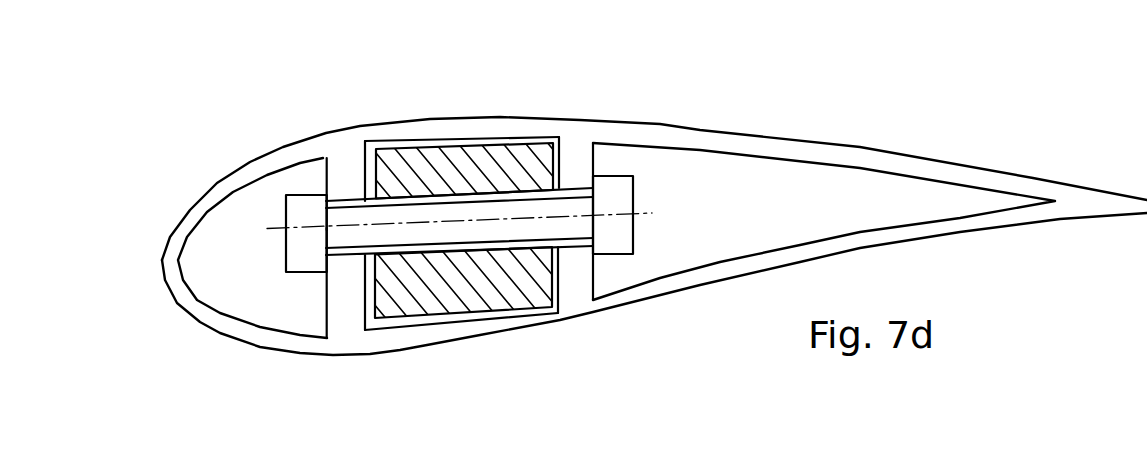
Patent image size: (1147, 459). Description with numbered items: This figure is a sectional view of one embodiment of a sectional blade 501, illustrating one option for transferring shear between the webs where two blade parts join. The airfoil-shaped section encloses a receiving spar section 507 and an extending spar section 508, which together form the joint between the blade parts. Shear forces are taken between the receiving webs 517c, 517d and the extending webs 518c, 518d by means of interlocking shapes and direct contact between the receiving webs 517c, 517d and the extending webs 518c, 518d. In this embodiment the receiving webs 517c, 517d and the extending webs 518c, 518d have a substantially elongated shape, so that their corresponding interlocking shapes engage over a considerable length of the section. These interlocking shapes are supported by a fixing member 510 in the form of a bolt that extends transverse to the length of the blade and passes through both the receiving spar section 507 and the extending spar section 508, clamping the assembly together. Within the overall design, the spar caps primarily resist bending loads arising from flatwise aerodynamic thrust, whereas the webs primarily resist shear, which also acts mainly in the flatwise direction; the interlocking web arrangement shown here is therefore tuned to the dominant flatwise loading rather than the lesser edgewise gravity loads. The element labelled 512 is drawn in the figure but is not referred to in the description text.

The sectional blade 501 is at (960, 132).
The receiving spar section 507 is at (397, 132).
The extending spar section 508 is at (462, 315).
The fixing member 510 is at (343, 236).
The upper magnet 512 is at (482, 172).
The receiving web 517c is at (345, 165).
The receiving web 517d is at (570, 152).
The extending web 518c is at (372, 302).
The extending web 518d is at (553, 283).